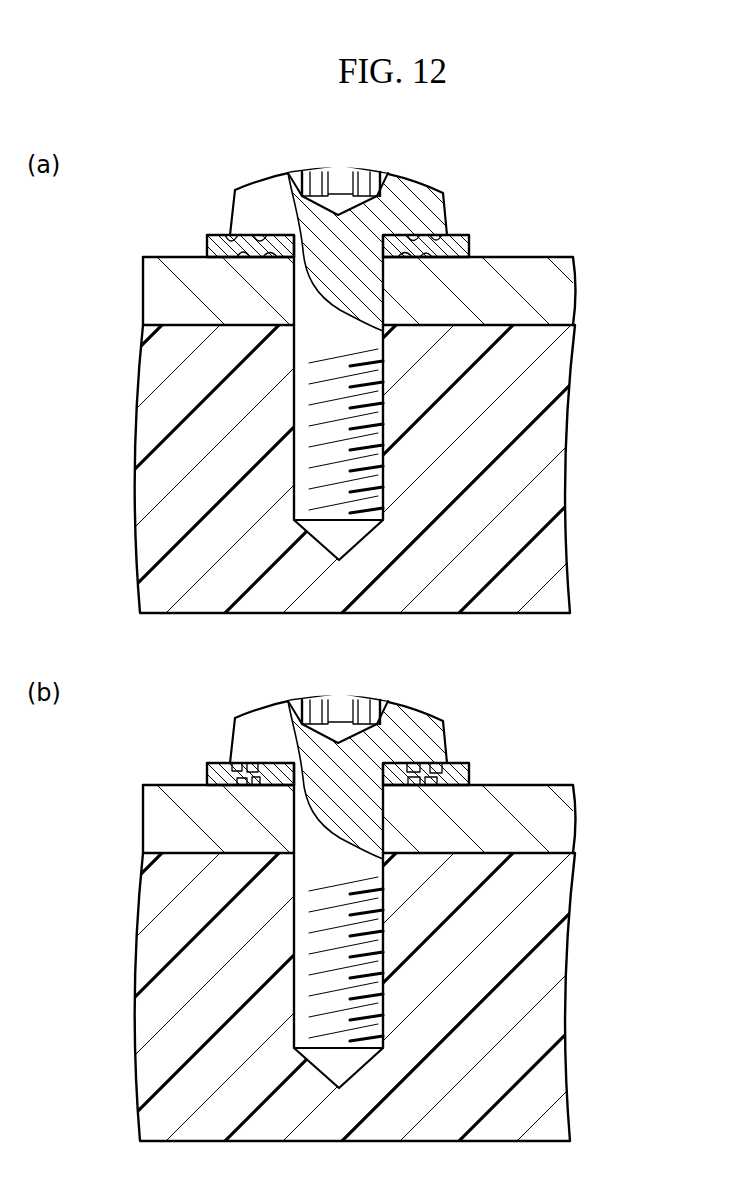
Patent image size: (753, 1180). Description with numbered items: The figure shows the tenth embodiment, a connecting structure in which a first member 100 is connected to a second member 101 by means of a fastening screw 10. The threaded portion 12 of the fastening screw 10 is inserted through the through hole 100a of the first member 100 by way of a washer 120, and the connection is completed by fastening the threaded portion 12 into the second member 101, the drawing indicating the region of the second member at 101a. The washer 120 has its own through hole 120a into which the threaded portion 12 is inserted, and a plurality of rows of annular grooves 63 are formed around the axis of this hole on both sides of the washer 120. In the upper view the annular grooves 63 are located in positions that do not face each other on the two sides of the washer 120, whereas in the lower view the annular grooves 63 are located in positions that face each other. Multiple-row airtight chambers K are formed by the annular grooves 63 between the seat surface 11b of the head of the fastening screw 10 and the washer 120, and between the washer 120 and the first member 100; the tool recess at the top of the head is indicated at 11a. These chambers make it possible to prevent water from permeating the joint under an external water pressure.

The fastening screw 10 is at (397, 167).
The tool engagement recess of screw head 11a is at (337, 180).
The seat surface 11b is at (452, 258).
The threaded portion 12 is at (300, 469).
The annular grooves 63 is at (265, 235).
The airtight chambers K is at (413, 240).
The first member 100 is at (160, 291).
The through hole 100a is at (302, 293).
The second member 101 is at (503, 538).
The screw hole of second member 101a is at (300, 337).
The washer 120 is at (470, 247).
The through hole 120a is at (290, 178).